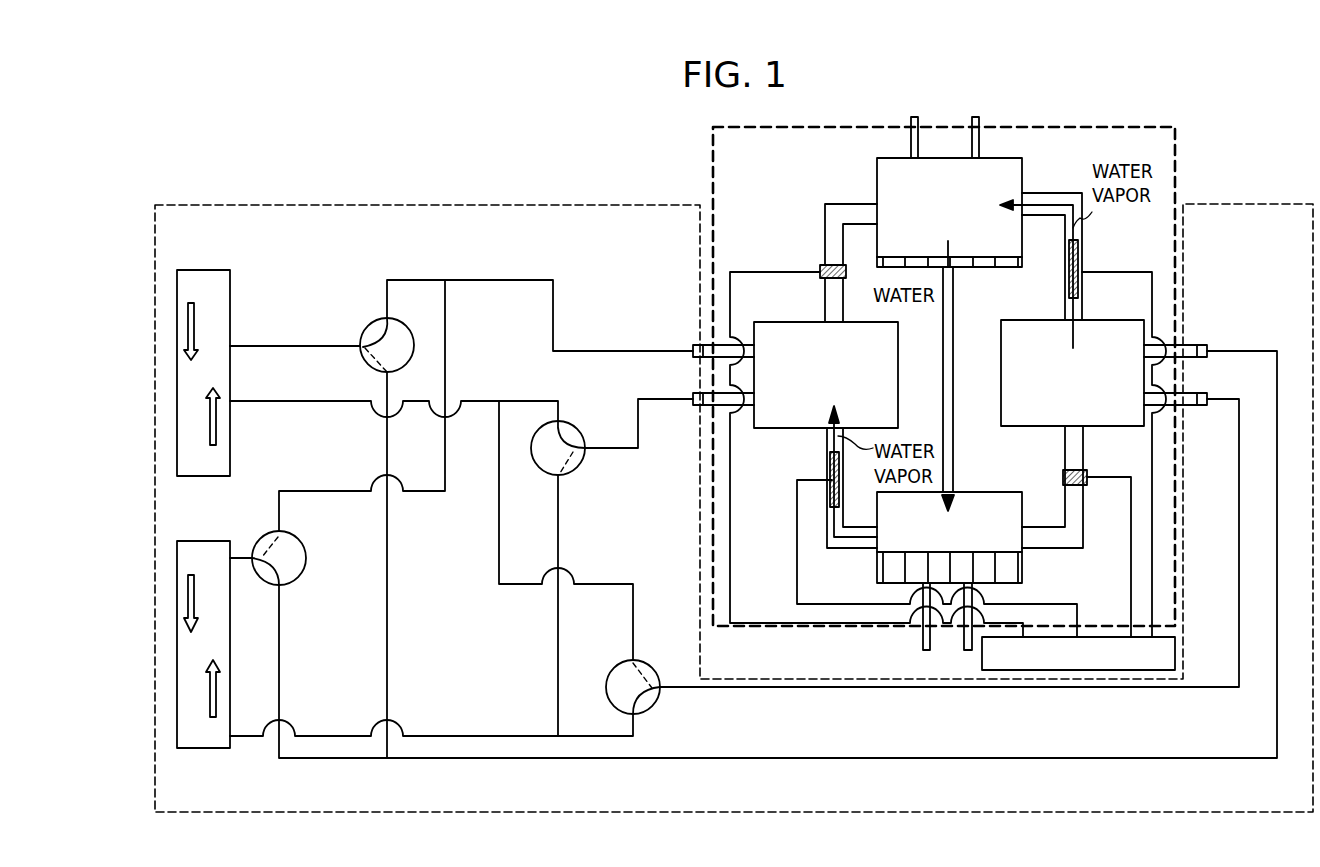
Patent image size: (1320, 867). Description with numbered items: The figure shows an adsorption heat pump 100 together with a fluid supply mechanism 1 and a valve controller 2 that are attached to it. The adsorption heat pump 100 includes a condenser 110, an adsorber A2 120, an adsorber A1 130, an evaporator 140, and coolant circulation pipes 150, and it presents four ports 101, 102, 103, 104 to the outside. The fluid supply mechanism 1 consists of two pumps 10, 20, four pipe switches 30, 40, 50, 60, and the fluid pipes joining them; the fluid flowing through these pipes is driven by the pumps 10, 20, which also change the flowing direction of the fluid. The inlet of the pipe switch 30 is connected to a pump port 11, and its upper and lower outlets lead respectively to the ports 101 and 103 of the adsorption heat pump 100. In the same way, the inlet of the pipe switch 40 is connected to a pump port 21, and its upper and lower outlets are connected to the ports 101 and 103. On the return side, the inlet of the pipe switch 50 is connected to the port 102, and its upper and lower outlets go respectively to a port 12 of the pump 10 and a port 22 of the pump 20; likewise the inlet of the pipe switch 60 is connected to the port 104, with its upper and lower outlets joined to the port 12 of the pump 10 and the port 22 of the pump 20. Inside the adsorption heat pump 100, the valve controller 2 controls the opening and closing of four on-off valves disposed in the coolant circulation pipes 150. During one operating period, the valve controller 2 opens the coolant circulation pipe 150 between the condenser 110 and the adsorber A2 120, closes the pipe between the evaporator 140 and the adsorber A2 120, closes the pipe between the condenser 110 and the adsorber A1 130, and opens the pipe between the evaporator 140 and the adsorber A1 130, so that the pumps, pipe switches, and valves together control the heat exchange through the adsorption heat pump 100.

The fluid supply mechanism 1 is at (483, 204).
The valve controller 2 is at (1178, 655).
The pump 10 is at (217, 274).
The pump port 11 is at (263, 346).
The port 12 is at (265, 403).
The pump 20 is at (207, 547).
The pump port 21 is at (240, 562).
The port 22 is at (237, 738).
The pipe switch 30 is at (382, 335).
The pipe switch 40 is at (305, 552).
The pipe switch 50 is at (578, 430).
The pipe switch 60 is at (650, 668).
The adsorption heat pump 100 is at (1173, 160).
The port 101 is at (690, 346).
The port 102 is at (697, 406).
The port 103 is at (1192, 350).
The port 104 is at (1192, 401).
The condenser 110 is at (1018, 162).
The adsorber A2 120 is at (1050, 328).
The adsorber A1 130 is at (818, 330).
The evaporator 140 is at (977, 494).
The coolant circulation pipes 150 is at (823, 215).